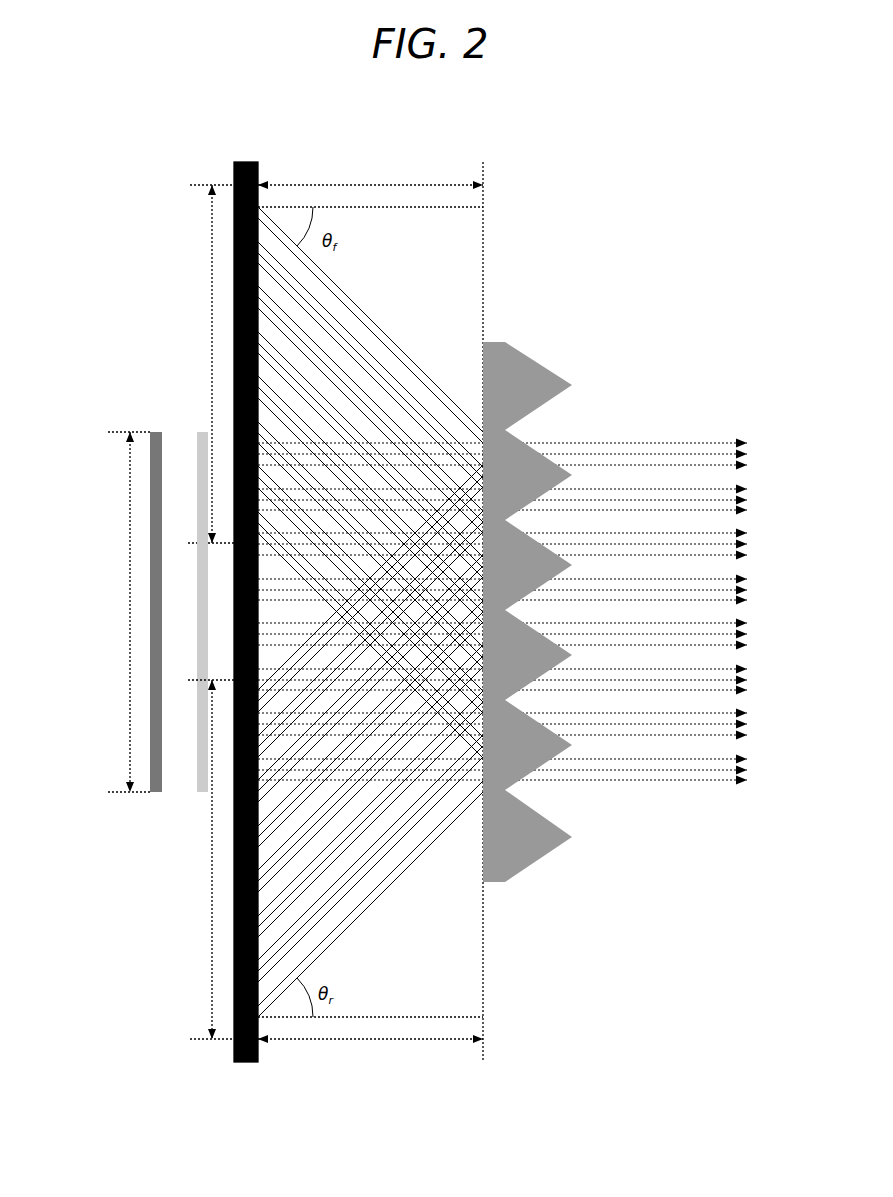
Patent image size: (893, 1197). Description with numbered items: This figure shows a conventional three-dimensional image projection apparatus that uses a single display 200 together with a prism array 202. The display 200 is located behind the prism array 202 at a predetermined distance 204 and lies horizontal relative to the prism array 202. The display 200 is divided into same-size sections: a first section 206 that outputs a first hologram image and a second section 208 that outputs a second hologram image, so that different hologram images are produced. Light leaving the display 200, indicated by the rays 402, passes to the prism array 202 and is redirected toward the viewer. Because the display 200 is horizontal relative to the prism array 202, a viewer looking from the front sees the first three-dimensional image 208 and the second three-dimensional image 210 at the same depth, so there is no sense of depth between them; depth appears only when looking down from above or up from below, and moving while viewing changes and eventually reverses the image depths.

The display 200 is at (245, 1066).
The prism array 202 is at (547, 853).
The predetermined distance 204 is at (374, 152).
The first section 206 is at (176, 363).
The second section 208 is at (200, 642).
The second 3D image 210 is at (150, 466).
The light rays 402 is at (380, 892).